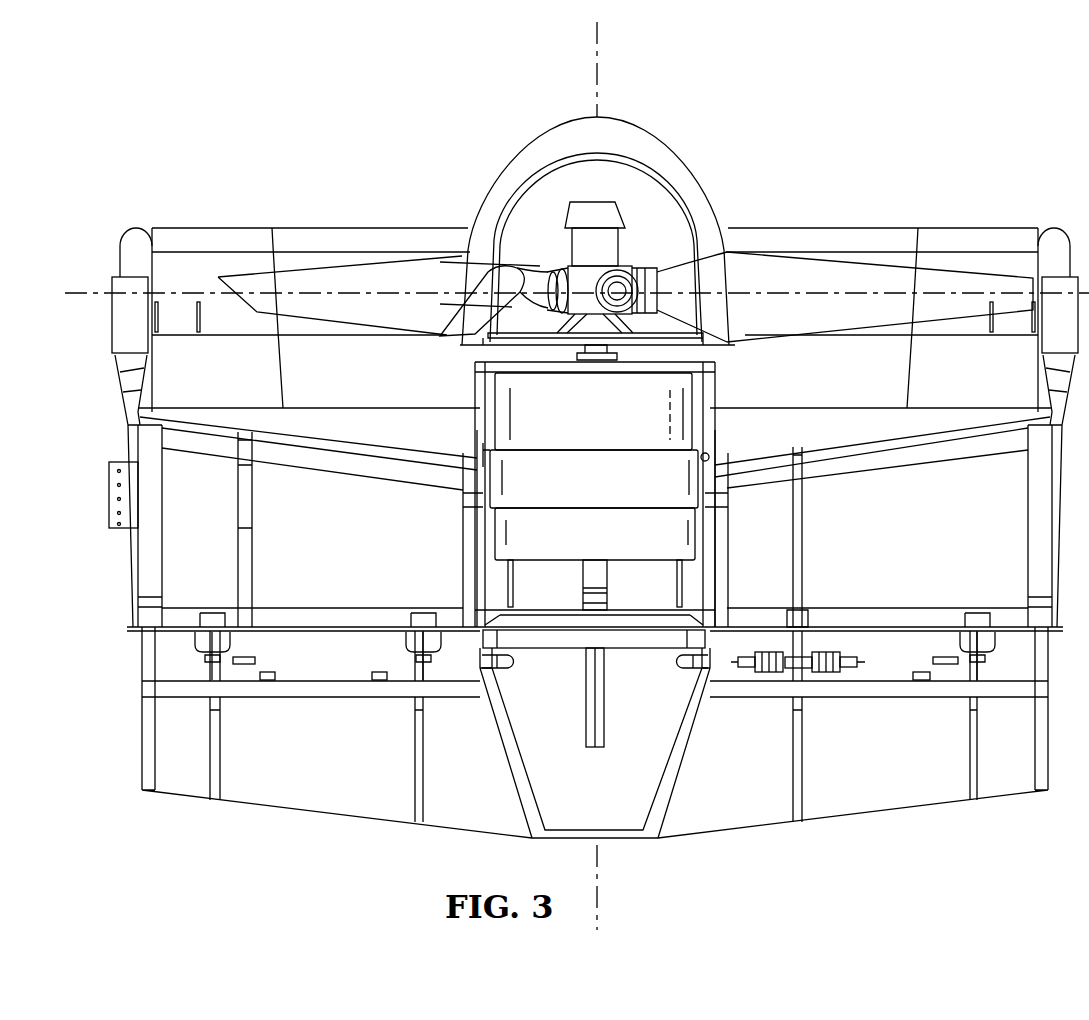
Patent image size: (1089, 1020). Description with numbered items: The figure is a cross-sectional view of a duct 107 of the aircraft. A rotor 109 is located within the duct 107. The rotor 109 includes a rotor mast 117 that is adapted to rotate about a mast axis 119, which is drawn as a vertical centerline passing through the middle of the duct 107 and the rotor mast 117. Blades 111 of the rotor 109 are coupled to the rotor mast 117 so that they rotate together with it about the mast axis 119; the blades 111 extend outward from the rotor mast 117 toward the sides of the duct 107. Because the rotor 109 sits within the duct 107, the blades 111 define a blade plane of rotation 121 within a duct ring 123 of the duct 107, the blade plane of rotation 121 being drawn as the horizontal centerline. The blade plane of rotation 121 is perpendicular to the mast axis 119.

The duct 107 is at (1013, 87).
The rotor 109 is at (653, 145).
The blades 111 is at (862, 252).
The rotor mast 117 is at (595, 348).
The mast axis 119 is at (599, 44).
The blade plane of rotation 121 is at (83, 292).
The duct ring 123 is at (198, 227).